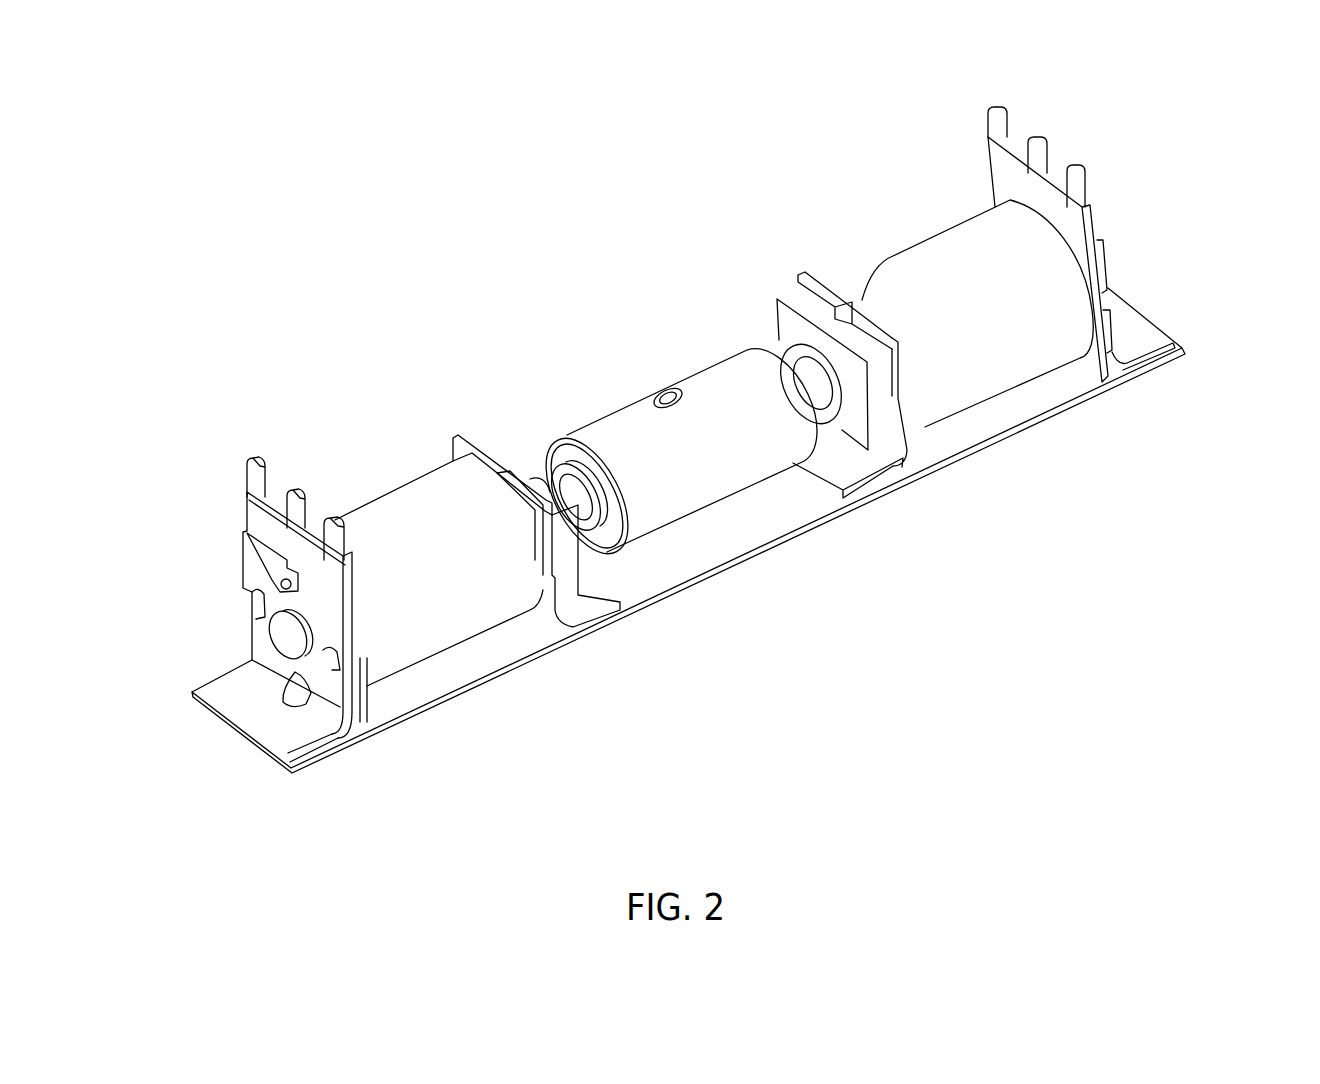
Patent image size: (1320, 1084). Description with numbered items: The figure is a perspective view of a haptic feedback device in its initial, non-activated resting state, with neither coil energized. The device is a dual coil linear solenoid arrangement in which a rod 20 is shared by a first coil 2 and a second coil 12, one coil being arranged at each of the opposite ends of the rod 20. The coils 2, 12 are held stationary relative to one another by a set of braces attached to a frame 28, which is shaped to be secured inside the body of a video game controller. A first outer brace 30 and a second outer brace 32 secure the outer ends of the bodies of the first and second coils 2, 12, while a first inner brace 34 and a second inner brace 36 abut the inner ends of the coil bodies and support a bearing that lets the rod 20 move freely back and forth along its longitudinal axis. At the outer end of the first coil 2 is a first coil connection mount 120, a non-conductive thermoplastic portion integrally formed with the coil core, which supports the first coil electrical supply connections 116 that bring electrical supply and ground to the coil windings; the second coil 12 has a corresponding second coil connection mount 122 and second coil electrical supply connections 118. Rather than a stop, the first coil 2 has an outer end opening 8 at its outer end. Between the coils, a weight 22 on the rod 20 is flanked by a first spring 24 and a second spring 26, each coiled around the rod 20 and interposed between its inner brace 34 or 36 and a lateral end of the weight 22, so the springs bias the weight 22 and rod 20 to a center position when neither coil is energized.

The first coil 2 is at (427, 593).
The outer end opening 8 is at (285, 642).
The second coil 12 is at (975, 308).
The rod 20 is at (852, 422).
The weight 22 is at (678, 458).
The first spring 24 is at (547, 445).
The second spring 26 is at (777, 348).
The frame 28 is at (787, 503).
The first outer brace 30 is at (288, 725).
The second outer brace 32 is at (1132, 333).
The first inner brace 34 is at (460, 446).
The second inner brace 36 is at (812, 280).
The first coil electrical supply connections 116 is at (288, 488).
The second coil electrical supply connections 118 is at (1040, 152).
The first coil connection mount 120 is at (267, 528).
The second coil connection mount 122 is at (1010, 185).